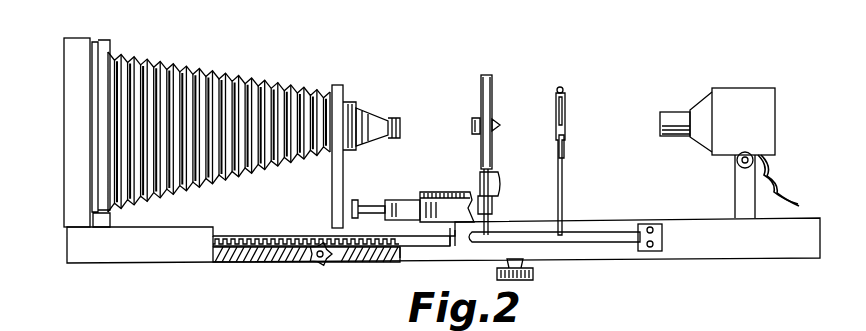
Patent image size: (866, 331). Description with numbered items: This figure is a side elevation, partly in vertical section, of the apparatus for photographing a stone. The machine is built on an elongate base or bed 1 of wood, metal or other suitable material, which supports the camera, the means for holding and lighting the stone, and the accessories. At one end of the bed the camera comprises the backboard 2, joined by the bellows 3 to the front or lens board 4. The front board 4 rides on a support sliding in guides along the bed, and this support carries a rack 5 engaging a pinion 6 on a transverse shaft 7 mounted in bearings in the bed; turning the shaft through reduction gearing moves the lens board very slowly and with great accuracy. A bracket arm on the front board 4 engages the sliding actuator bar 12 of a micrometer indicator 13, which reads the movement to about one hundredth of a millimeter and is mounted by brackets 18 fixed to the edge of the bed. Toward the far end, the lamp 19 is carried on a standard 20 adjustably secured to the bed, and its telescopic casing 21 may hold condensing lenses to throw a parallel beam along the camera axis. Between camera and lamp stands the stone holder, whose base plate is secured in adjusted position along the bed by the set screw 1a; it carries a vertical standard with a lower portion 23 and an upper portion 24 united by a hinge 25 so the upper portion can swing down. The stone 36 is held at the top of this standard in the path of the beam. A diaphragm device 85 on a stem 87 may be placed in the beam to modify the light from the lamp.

The base or bed 1 is at (170, 262).
The set screw 1a is at (533, 274).
The backboard 2 is at (99, 38).
The bellows 3 is at (167, 70).
The front or lens board 4 is at (332, 88).
The rack 5 is at (258, 240).
The pinion 6 is at (322, 265).
The transverse shaft 7 is at (310, 262).
The sliding actuator bar 12 is at (373, 207).
The micrometer indicator 13 is at (400, 200).
The hinge 25 is at (466, 190).
The upper portion of the standard 24 is at (482, 152).
The stone 36 is at (497, 124).
The lower portion of the standard 23 is at (490, 226).
The diaphragm device 85 is at (563, 112).
The stem 87 is at (565, 160).
The lamp 19 is at (733, 93).
The telescopic casing 21 is at (676, 112).
The standard 20 is at (742, 195).
The brackets 18 is at (642, 252).